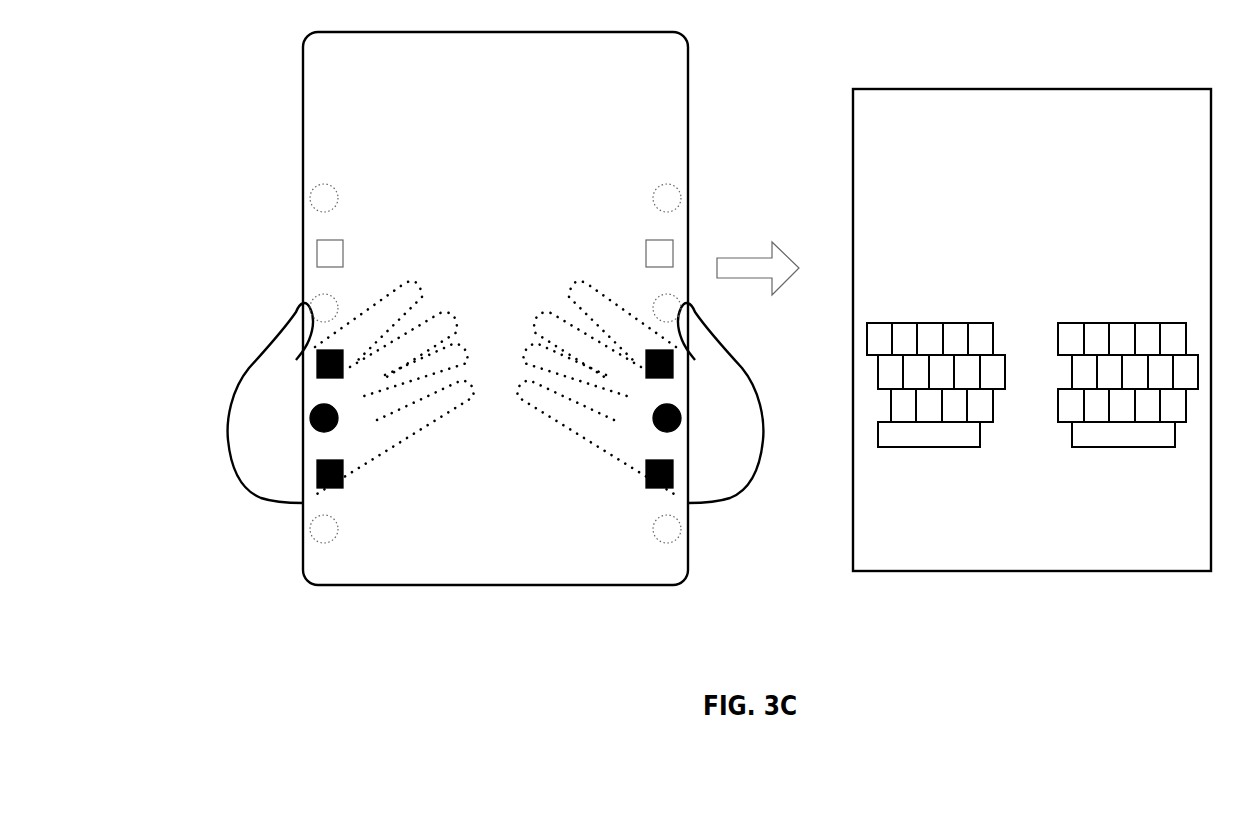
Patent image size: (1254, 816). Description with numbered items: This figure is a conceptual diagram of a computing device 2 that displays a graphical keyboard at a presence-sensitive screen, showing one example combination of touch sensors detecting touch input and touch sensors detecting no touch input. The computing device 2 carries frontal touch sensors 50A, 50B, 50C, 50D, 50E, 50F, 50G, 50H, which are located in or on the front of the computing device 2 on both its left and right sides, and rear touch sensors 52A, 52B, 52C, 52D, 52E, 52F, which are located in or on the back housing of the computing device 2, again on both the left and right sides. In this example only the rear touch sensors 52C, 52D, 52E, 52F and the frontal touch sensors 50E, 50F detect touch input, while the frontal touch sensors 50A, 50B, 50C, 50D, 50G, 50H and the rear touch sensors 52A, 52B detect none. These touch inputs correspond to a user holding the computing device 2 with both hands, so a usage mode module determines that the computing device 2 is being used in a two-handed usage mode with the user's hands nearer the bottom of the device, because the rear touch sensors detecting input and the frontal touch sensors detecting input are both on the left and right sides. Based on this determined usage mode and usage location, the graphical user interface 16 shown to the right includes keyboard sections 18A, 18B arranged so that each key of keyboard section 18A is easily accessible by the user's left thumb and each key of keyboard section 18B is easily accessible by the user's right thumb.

The computing device 2 is at (490, 82).
The graphical user interface 16 is at (1211, 115).
The keyboard section 18A is at (899, 323).
The keyboard section 18B is at (1102, 323).
The frontal touch sensor 50A is at (325, 184).
The frontal touch sensor 50B is at (667, 184).
The frontal touch sensor 50C is at (325, 294).
The frontal touch sensor 50D is at (667, 294).
The frontal touch sensor 50E is at (325, 404).
The frontal touch sensor 50F is at (667, 404).
The frontal touch sensor 50G is at (325, 515).
The frontal touch sensor 50H is at (667, 515).
The rear touch sensor 52A is at (343, 240).
The rear touch sensor 52B is at (646, 240).
The rear touch sensor 52C is at (343, 350).
The rear touch sensor 52D is at (646, 350).
The rear touch sensor 52E is at (343, 460).
The rear touch sensor 52F is at (646, 460).